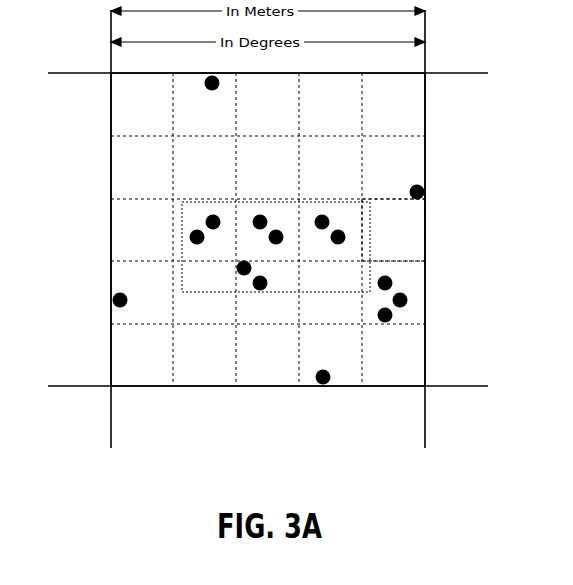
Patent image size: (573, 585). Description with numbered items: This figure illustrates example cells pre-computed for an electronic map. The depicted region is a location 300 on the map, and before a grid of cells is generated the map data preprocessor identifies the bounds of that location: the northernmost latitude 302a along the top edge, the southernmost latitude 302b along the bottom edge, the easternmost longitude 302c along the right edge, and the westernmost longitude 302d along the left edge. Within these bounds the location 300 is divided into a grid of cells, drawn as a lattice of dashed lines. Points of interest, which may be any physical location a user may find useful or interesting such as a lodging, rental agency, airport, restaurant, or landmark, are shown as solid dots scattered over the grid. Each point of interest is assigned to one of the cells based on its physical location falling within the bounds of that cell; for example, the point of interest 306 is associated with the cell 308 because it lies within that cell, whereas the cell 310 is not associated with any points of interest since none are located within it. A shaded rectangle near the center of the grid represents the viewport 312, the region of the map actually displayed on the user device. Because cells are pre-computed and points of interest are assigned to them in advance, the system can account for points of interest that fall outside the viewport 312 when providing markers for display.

The location 300 is at (98, 49).
The northernmost latitude 302a is at (404, 72).
The southernmost latitude 302b is at (390, 389).
The easternmost longitude 302c is at (426, 107).
The westernmost longitude 302d is at (110, 105).
The point of interest 306 is at (424, 192).
The cell 308 is at (410, 157).
The cell 310 is at (410, 219).
The viewport 312 is at (371, 247).